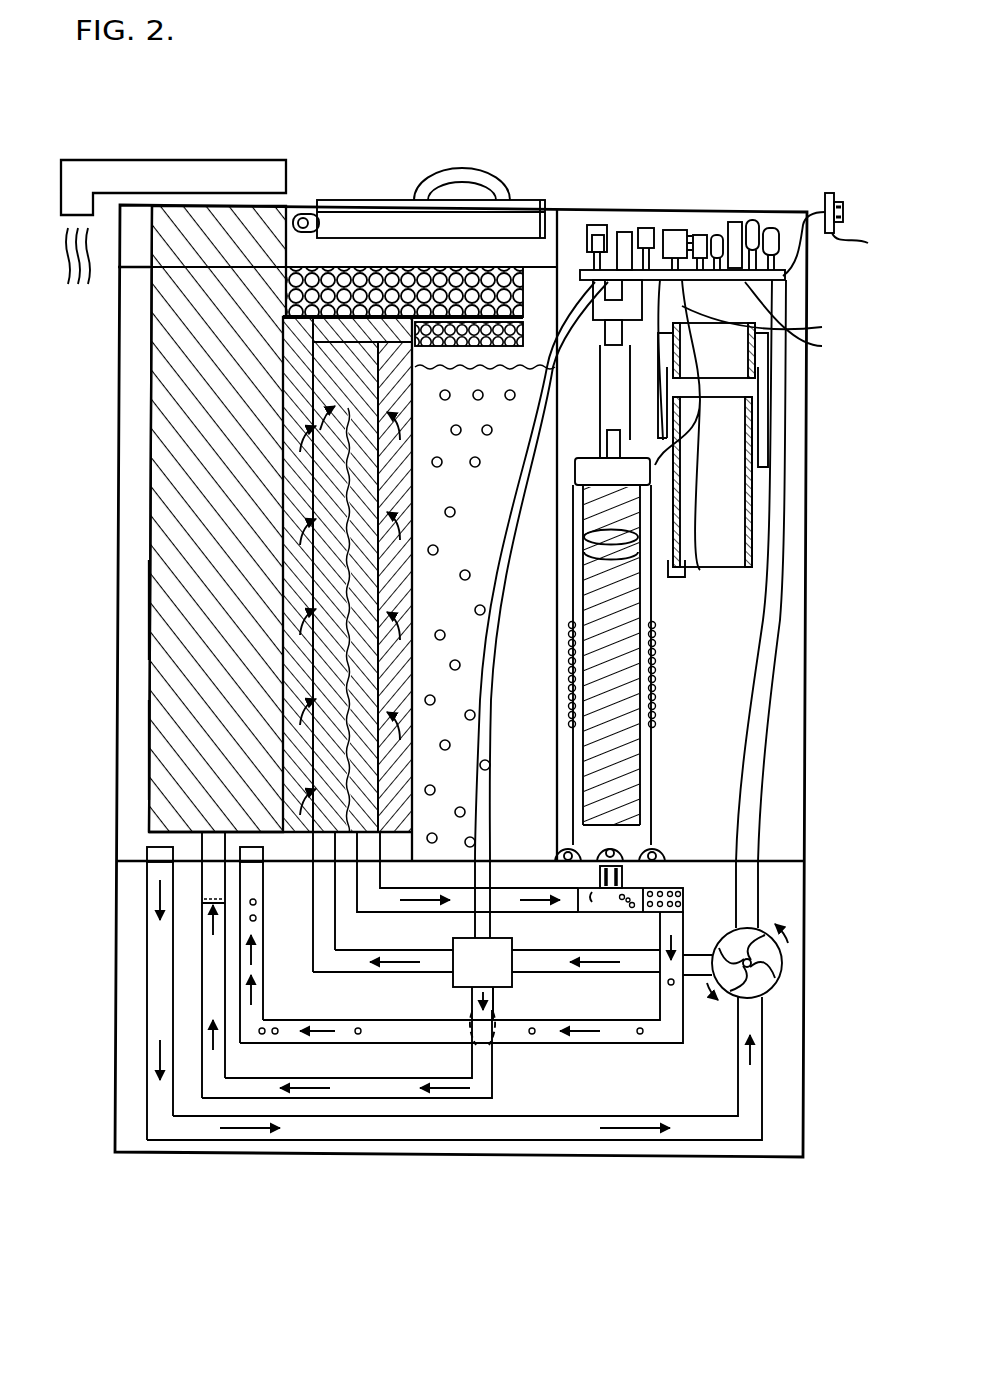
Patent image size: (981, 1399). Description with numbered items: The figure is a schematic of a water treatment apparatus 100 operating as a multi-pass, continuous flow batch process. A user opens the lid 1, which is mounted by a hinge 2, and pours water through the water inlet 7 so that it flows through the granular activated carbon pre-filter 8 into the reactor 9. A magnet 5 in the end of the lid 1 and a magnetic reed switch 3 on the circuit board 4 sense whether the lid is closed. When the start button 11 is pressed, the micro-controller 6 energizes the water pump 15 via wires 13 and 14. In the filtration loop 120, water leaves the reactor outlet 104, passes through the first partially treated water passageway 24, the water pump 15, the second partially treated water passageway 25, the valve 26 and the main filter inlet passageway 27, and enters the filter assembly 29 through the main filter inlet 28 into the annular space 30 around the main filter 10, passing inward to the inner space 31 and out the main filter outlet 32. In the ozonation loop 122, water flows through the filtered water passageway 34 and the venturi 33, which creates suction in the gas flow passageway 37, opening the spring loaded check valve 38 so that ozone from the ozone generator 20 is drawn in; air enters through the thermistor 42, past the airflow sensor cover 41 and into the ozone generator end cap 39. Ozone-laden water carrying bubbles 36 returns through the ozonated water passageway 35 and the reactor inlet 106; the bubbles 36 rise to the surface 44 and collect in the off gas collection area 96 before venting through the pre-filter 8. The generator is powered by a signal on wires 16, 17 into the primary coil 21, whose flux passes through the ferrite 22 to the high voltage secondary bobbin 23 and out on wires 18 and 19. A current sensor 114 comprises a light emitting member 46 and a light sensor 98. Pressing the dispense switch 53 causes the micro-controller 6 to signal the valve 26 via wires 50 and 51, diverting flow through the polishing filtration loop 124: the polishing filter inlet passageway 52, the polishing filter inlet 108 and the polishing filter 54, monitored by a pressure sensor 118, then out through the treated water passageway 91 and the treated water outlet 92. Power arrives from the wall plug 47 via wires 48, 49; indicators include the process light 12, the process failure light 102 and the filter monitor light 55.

The lid 1 is at (450, 215).
The hinge 2 is at (303, 214).
The magnetic reed switch 3 is at (597, 225).
The circuit board 4 is at (790, 290).
The magnet 5 is at (540, 232).
The micro-controller 6 is at (701, 235).
The water inlet 7 is at (338, 250).
The pre-filter 8 is at (372, 275).
The water treatment reactor 9 is at (457, 375).
The main filter 10 is at (290, 435).
The start button 11 is at (735, 222).
The process light 12 is at (771, 228).
The wire 13 is at (772, 660).
The wire 14 is at (760, 700).
The water pump 15 is at (785, 955).
The wire 16 is at (766, 322).
The wire 17 is at (766, 340).
The wire 18 is at (618, 548).
The wire 19 is at (682, 576).
The ozone generator 20 is at (658, 660).
The primary coil 21 is at (718, 360).
The ferrite 22 is at (768, 442).
The high voltage secondary bobbin 23 is at (725, 512).
The first partially treated water passageway 24 is at (147, 1082).
The second partially treated water passageway 25 is at (630, 975).
The valve 26 is at (500, 975).
The main filter inlet passageway 27 is at (420, 974).
The main filter inlet 28 is at (318, 868).
The filter assembly 29 is at (149, 608).
The annular space 30 is at (283, 524).
The inner space 31 is at (300, 657).
The main filter outlet 32 is at (414, 848).
The venturi 33 is at (600, 913).
The filtered water passageway 34 is at (432, 914).
The ozonated water passageway 35 is at (620, 1044).
The ozone rich gas bubbles 36 is at (437, 470).
The gas flow passageway 37 is at (625, 876).
The spring loaded check valve 38 is at (616, 848).
The ozone generator end cap 39 is at (580, 500).
The airflow sensor cover 41 is at (603, 320).
The thermistor 42 is at (612, 385).
The surface of the water 44 is at (382, 388).
The light emitting member 46 is at (638, 278).
The wall plug 47 is at (865, 243).
The wire 48 is at (828, 196).
The wire 49 is at (812, 225).
The wire 50 is at (489, 620).
The wire 51 is at (494, 690).
The polishing filter inlet passageway 52 is at (490, 1070).
The dispense switch 53 is at (752, 220).
The polishing filter 54 is at (162, 745).
The filter monitor light 55 is at (717, 235).
The treated water passageway 91 is at (203, 160).
The treated water outlet 92 is at (61, 205).
The off gas collection area 96 is at (400, 362).
The light sensor 98 is at (676, 230).
The water treatment apparatus 100 is at (118, 521).
The process failure light 102 is at (624, 232).
The reactor outlet 104 is at (160, 851).
The reactor inlet 106 is at (255, 862).
The polishing filter inlet 108 is at (262, 852).
The current sensor 114 is at (646, 228).
The pressure sensor 118 is at (220, 855).
The filtration loop 120 is at (246, 1152).
The ozonation loop 122 is at (588, 1044).
The polishing filtration loop 124 is at (355, 1105).